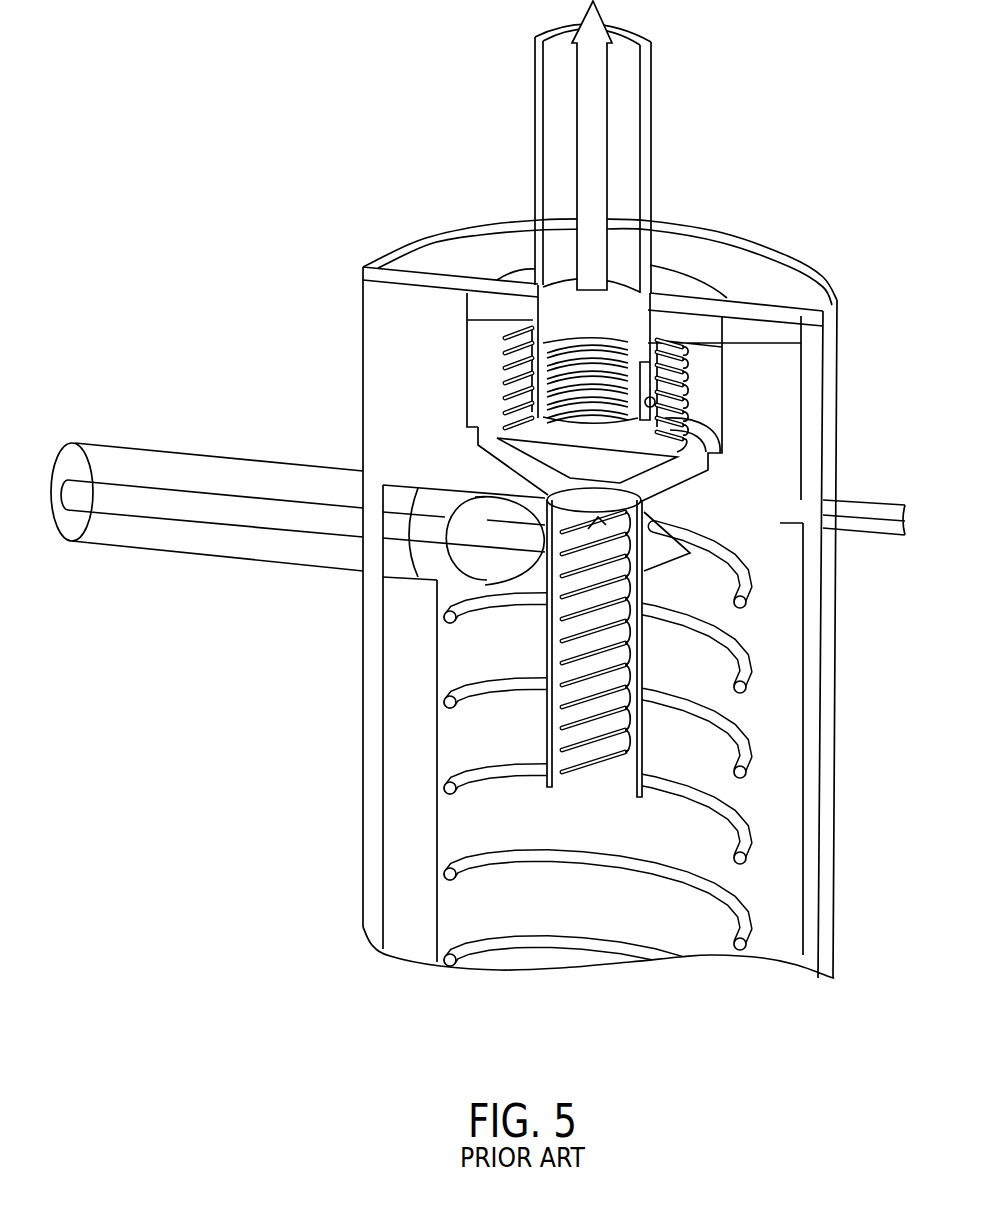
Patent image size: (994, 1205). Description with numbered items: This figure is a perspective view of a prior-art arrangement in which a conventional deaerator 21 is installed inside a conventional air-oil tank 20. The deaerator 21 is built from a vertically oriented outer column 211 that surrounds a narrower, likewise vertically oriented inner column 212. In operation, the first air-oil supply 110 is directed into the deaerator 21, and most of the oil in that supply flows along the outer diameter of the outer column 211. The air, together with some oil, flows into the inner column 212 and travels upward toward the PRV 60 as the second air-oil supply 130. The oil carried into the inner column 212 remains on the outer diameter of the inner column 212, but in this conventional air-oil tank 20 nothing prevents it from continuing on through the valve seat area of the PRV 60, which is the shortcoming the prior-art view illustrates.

The air-oil tank 20 is at (871, 904).
The deaerator 21 is at (813, 533).
The PRV 60 is at (493, 428).
The first air-oil supply 110 is at (190, 508).
The second air-oil supply 130 is at (580, 657).
The outer column 211 is at (442, 808).
The inner column 212 is at (550, 727).